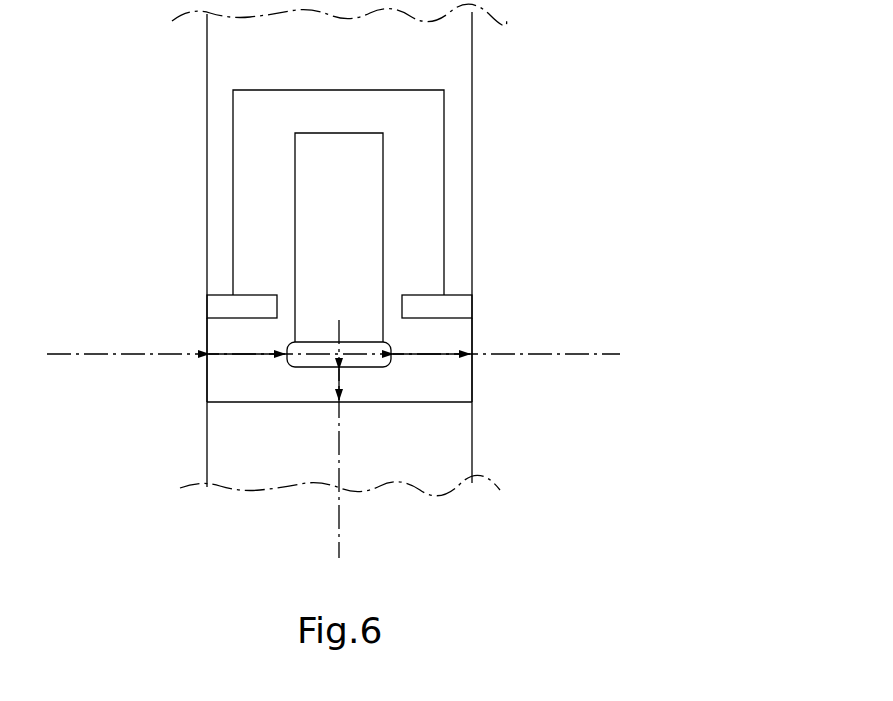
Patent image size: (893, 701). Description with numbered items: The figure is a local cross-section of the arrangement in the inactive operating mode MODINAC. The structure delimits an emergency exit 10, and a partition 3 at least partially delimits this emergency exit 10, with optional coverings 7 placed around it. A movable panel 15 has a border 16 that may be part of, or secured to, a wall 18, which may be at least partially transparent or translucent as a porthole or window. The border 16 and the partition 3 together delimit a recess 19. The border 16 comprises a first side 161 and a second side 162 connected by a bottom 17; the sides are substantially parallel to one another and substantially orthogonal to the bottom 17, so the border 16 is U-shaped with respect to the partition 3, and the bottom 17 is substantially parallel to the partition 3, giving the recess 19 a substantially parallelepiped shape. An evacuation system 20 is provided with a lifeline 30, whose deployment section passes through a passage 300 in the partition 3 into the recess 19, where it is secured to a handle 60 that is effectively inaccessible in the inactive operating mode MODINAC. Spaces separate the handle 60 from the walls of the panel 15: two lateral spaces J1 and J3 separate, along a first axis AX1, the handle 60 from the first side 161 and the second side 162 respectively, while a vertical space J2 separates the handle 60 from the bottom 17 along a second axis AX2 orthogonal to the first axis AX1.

The inactive operating mode MODINAC is at (562, 89).
The coverings 7 is at (207, 90).
The evacuation system 20 is at (420, 168).
The passage 300 is at (394, 289).
The partition 3 is at (452, 307).
The border 16 is at (497, 342).
The first side 161 is at (205, 365).
The second side 162 is at (472, 388).
The lifeline 30 is at (354, 231).
The handle 60 is at (358, 343).
The bottom 17 is at (275, 390).
The recess 19 is at (424, 394).
The emergency exit 10 is at (372, 462).
The movable panel 15 is at (495, 448).
The wall 18 is at (450, 457).
The first lateral space J1 is at (230, 335).
The vertical space J2 is at (344, 383).
The second lateral space J3 is at (428, 355).
The first axis AX1 is at (107, 357).
The second axis AX2 is at (341, 547).